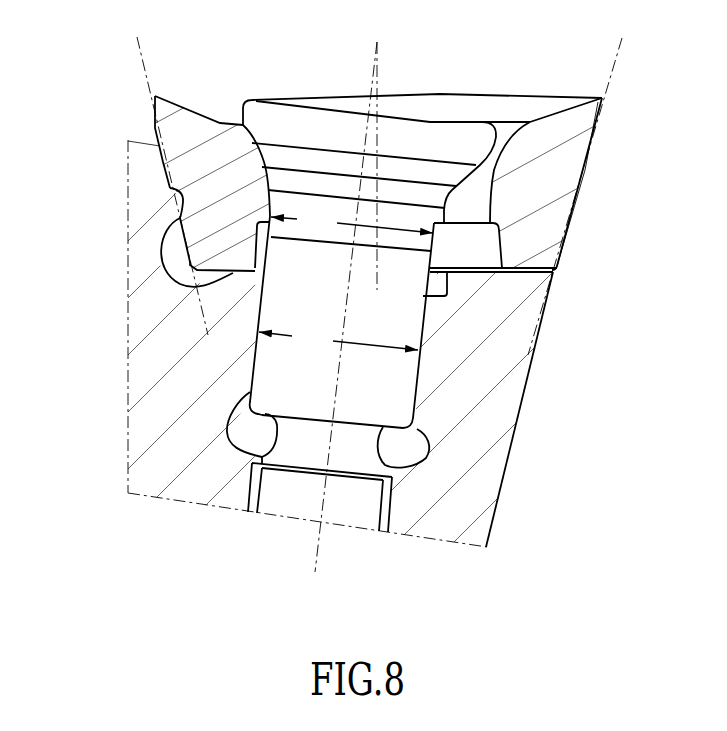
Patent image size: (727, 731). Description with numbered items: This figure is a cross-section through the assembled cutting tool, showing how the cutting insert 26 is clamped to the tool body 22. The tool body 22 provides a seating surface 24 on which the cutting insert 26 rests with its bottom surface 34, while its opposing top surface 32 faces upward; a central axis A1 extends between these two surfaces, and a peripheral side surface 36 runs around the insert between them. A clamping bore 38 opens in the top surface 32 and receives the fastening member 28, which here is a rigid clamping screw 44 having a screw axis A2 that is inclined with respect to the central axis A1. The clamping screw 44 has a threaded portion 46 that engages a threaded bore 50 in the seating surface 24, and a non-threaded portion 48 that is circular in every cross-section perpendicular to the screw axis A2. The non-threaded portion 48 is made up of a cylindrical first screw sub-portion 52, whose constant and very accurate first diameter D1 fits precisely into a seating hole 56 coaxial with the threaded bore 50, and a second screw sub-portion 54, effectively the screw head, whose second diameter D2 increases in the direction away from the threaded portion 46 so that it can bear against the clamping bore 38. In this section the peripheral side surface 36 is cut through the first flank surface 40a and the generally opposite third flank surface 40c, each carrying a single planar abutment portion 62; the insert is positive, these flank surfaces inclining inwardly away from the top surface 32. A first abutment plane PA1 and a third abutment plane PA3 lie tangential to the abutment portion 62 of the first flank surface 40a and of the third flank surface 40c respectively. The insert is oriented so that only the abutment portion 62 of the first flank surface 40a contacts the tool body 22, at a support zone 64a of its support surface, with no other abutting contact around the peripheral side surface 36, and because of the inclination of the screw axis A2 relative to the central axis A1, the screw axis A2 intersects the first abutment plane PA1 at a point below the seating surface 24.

The tool body 22 is at (160, 367).
The seating surface 24 is at (483, 266).
The cutting insert 26 is at (543, 176).
The fastening member 28 is at (339, 142).
The top surface 32 is at (476, 111).
The bottom surface 34 is at (515, 276).
The peripheral side surface 36 is at (582, 212).
The clamping bore 38 is at (496, 146).
The first flank surface 40a is at (165, 171).
The third flank surface 40c is at (594, 168).
The clamping screw 44 is at (308, 148).
The threaded portion 46 is at (352, 496).
The non-threaded portion 48 is at (382, 367).
The threaded bore 50 is at (258, 481).
The first screw sub-portion 52 is at (363, 380).
The second screw sub-portion 54 is at (408, 245).
The seating hole 56 is at (262, 340).
The abutment portion 62 is at (172, 188).
The support zone 64a is at (178, 215).
The first diameter D1 is at (338, 340).
The second diameter D2 is at (352, 218).
The central axis A1 is at (380, 181).
The screw axis A2 is at (333, 324).
The first abutment plane PA1 is at (160, 169).
The third abutment plane PA3 is at (593, 179).